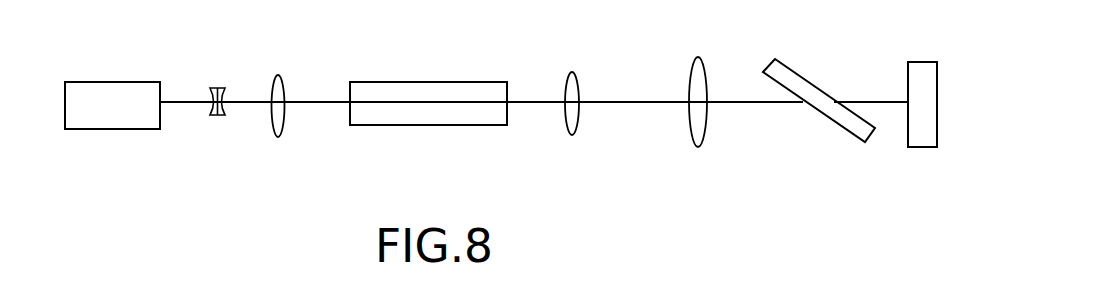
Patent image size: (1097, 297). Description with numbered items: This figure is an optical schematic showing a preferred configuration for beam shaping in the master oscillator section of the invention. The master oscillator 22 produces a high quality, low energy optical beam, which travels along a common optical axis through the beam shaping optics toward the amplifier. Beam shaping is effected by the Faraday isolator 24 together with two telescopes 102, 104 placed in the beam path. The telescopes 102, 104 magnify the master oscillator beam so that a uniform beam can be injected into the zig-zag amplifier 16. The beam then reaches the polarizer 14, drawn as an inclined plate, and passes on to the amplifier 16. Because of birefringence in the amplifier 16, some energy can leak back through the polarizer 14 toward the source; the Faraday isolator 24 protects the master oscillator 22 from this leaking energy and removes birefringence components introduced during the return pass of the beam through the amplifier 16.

The master oscillator 22 is at (105, 82).
The Faraday isolator 24 is at (398, 82).
The telescope 102 is at (297, 142).
The telescope 104 is at (713, 147).
The polarizer 14 is at (775, 60).
The zig-zag amplifier 16 is at (918, 62).